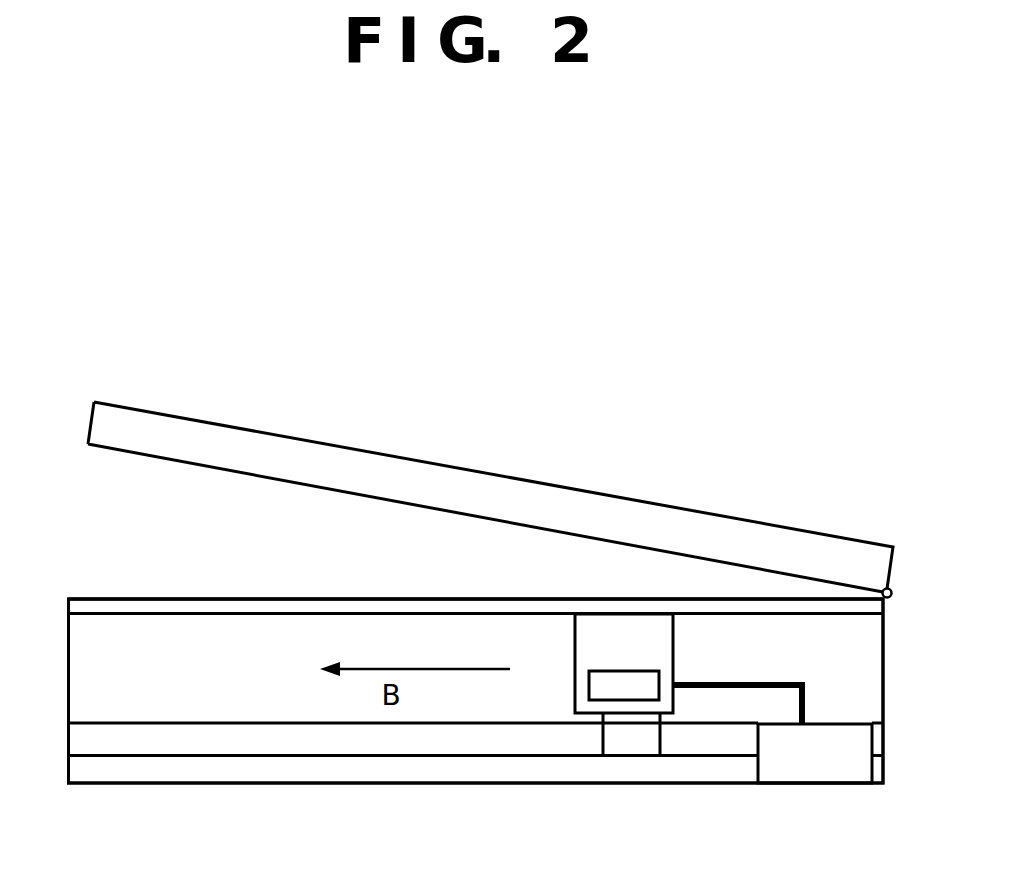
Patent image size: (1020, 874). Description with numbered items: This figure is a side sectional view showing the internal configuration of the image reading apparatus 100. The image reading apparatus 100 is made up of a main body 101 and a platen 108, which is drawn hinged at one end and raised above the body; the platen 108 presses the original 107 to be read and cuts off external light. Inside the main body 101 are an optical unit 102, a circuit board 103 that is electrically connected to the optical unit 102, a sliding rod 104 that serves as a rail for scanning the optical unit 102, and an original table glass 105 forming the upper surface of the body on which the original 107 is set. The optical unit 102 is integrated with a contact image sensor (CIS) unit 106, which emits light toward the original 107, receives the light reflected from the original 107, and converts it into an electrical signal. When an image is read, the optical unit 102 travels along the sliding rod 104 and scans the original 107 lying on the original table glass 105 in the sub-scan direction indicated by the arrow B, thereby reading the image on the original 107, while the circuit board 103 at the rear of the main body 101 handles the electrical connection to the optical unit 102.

The image reading apparatus 100 is at (432, 335).
The main body 101 is at (162, 672).
The optical unit 102 is at (618, 647).
The circuit board 103 is at (815, 765).
The sliding rod 104 is at (380, 743).
The original table glass 105 is at (285, 633).
The contact image sensor (CIS) unit 106 is at (630, 687).
The original 107 is at (97, 597).
The platen 108 is at (598, 512).